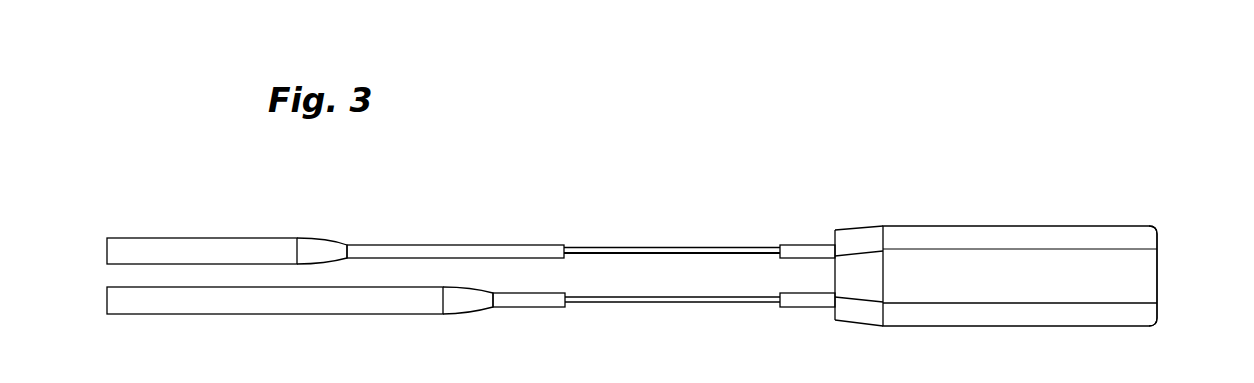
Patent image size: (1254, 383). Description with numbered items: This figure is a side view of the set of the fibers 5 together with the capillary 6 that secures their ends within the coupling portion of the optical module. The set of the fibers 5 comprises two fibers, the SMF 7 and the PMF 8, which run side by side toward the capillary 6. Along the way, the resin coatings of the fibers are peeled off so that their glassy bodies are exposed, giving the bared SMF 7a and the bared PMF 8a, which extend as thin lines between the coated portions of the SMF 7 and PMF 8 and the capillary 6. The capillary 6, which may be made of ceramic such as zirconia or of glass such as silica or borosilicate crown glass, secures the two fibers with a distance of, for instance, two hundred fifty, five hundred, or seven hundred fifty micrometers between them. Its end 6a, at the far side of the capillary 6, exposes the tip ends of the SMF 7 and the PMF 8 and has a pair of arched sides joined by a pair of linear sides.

The set of the fibers 5 is at (533, 137).
The PMF 8 is at (500, 252).
The SMF 7 is at (532, 300).
The bared PMF 8a is at (692, 250).
The bared SMF 7a is at (741, 300).
The capillary 6 is at (986, 251).
The end of the capillary 6a is at (1158, 274).